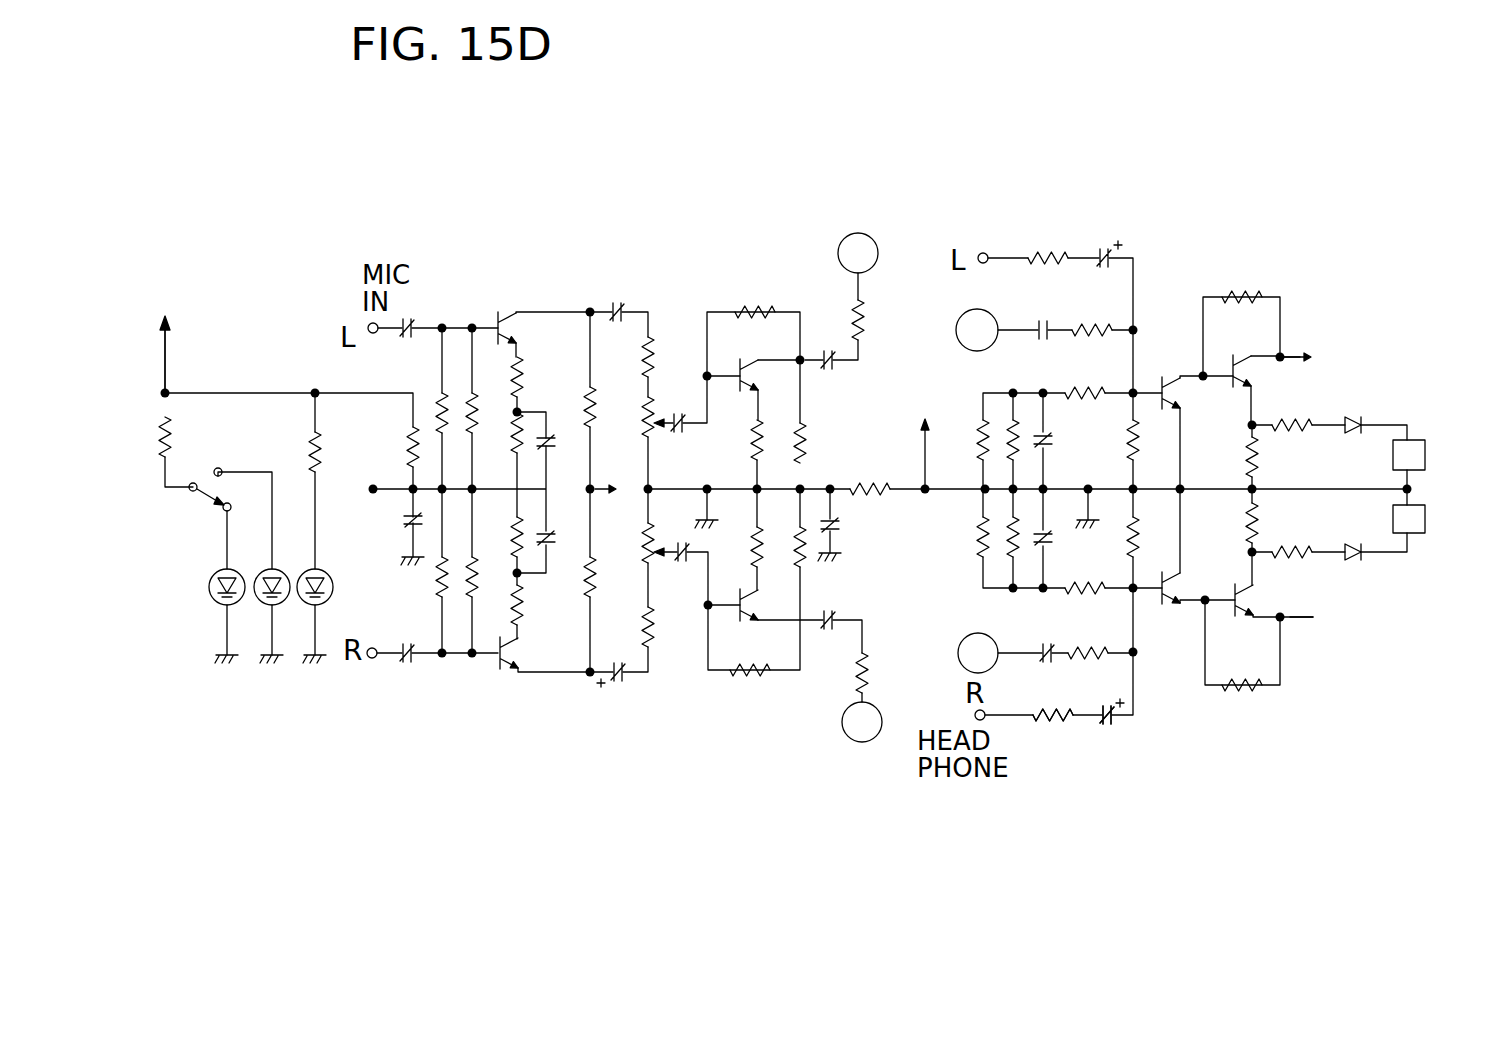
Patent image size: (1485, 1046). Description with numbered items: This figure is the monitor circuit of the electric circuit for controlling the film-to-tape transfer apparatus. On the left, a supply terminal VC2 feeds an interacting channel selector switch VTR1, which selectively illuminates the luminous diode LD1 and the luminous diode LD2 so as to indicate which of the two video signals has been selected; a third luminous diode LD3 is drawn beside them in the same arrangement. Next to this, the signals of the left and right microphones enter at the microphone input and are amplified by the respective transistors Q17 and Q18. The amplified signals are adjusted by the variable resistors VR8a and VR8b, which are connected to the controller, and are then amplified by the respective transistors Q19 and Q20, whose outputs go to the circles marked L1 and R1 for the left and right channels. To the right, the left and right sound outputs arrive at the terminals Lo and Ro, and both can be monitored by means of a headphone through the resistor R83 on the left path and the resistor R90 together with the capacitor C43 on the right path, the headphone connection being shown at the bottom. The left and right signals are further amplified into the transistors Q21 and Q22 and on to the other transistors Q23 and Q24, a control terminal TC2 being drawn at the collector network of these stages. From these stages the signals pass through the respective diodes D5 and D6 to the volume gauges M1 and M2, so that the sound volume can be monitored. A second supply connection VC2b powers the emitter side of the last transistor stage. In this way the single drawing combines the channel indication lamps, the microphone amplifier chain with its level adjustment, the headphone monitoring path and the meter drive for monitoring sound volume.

The supply voltage terminal VC2 is at (163, 338).
The interacting channel selector switch VTR1 is at (182, 502).
The luminous diode LD1 is at (202, 587).
The luminous diode LD2 is at (257, 612).
The light emitting diode LD3 is at (303, 608).
The transistor Q17 is at (537, 330).
The transistor Q18 is at (538, 655).
The variable resistor VR8a is at (686, 435).
The variable resistor VR8b is at (617, 513).
The transistor Q19 is at (760, 373).
The transistor Q20 is at (765, 607).
The left channel output terminal L1 is at (860, 247).
The right channel output terminal R1 is at (850, 727).
The resistor R83 is at (1042, 278).
The left channel input terminal Lo is at (973, 331).
The right channel input terminal Ro is at (978, 637).
The resistor R90 is at (1054, 734).
The capacitor C43 is at (1124, 740).
The transistor Q21 is at (1201, 403).
The transistor Q22 is at (1272, 376).
The transistor Q23 is at (1176, 588).
The transistor Q24 is at (1275, 596).
The control terminal TC2 is at (1323, 357).
The diode D5 is at (1352, 405).
The diode D6 is at (1362, 572).
The VU meter M1 is at (1435, 456).
The VU meter M2 is at (1435, 526).
The supply voltage terminal VC2 VC2b is at (1332, 623).